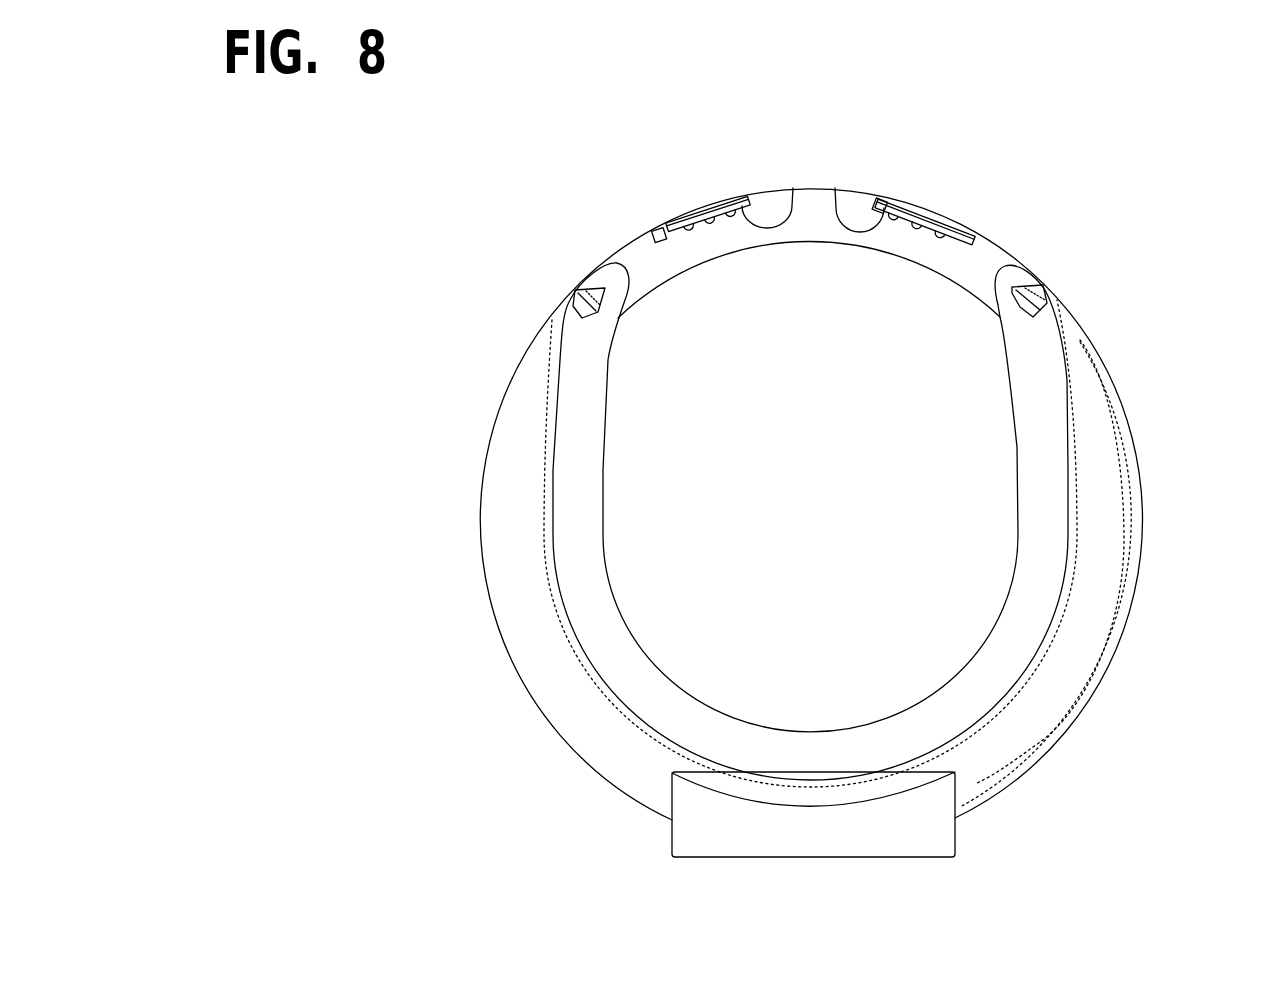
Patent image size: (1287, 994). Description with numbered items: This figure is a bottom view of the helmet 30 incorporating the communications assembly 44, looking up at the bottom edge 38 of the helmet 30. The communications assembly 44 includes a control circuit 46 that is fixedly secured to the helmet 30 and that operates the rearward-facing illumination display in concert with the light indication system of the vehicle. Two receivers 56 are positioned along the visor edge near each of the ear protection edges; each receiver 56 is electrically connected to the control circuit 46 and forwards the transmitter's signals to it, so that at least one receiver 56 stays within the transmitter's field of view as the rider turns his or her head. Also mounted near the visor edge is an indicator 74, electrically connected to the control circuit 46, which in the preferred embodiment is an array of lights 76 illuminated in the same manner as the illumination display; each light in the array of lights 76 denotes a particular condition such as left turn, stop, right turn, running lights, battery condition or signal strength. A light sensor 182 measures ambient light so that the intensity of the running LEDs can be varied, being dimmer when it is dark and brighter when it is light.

The helmet 30 is at (1140, 573).
The bottom edge 38 is at (542, 507).
The communications assembly 44 is at (486, 703).
The control circuit 46 is at (918, 842).
The receiver 56 is at (585, 290).
The indicator 74 is at (727, 213).
The array of lights 76 is at (794, 189).
The light sensor 182 is at (660, 240).